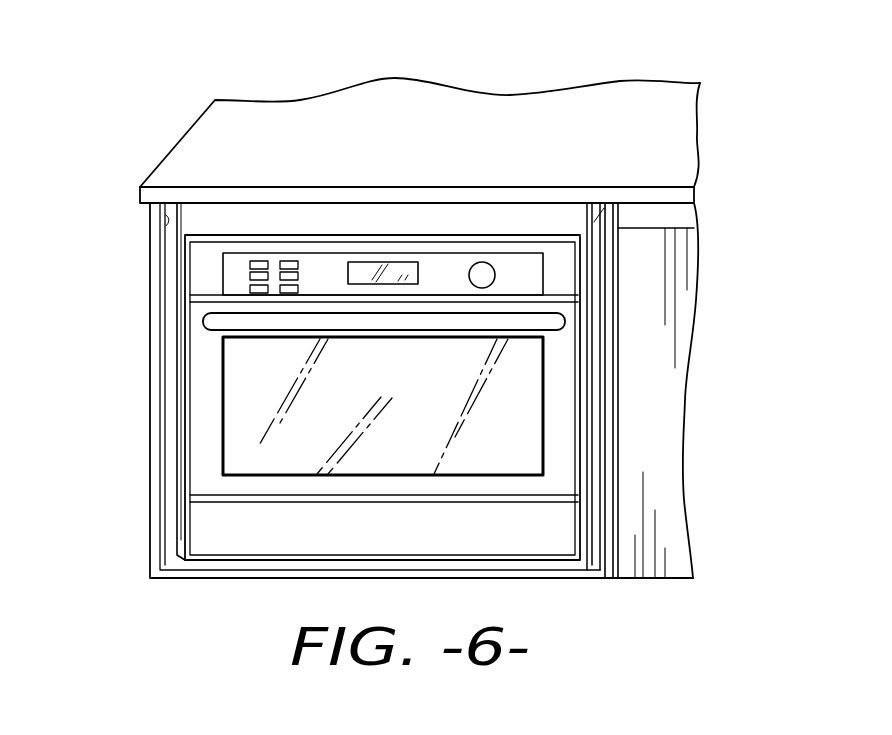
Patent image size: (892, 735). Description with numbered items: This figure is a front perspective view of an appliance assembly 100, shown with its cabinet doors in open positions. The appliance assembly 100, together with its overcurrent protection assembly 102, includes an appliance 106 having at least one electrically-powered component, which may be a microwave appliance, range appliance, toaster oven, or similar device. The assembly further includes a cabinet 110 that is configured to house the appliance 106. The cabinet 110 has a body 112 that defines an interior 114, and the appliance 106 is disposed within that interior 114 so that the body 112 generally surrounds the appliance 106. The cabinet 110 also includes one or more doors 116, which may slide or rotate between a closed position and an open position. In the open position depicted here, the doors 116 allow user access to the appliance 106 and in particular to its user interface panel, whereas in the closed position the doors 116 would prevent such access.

The appliance assembly 100 is at (156, 64).
The overcurrent protection assembly 102 is at (725, 198).
The appliance 106 is at (204, 441).
The cabinet 110 is at (636, 97).
The body 112 is at (677, 132).
The interior 114 is at (181, 386).
The doors 116 is at (173, 312).